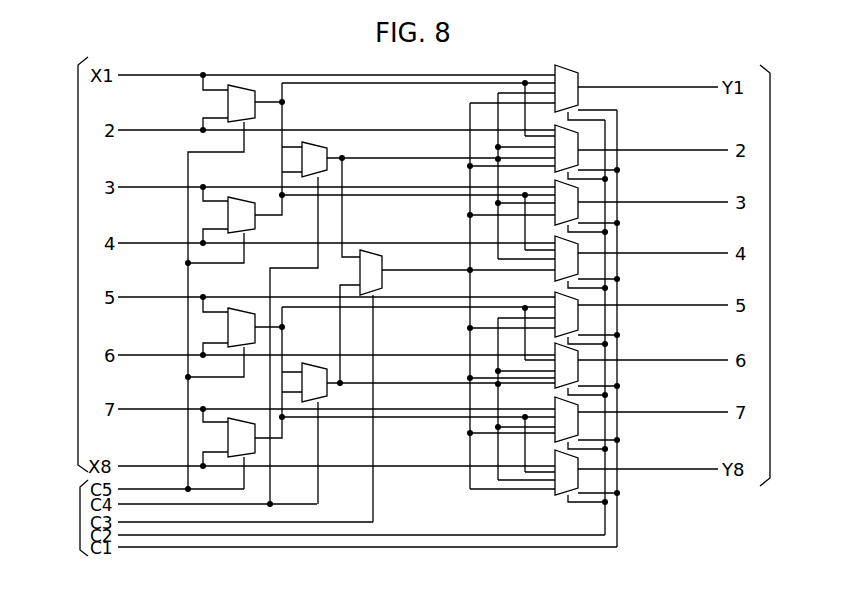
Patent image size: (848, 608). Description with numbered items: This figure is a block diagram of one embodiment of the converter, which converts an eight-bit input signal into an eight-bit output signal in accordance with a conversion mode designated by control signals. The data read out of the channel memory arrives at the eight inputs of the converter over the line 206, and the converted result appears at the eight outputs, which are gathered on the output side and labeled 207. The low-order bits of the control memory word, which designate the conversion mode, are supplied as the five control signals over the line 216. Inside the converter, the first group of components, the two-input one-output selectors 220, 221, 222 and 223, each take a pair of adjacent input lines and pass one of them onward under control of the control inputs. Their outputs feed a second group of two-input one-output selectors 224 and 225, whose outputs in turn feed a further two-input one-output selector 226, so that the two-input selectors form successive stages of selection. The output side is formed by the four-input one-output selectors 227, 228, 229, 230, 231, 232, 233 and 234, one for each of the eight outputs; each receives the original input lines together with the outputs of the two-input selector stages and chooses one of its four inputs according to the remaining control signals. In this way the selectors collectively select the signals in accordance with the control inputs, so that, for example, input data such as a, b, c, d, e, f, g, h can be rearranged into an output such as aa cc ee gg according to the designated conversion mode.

The line 206 is at (59, 264).
The output lines Y1-Y8 207 is at (790, 275).
The line 216 is at (62, 518).
The 2-input 1-output selector 220 is at (240, 85).
The 2-input 1-output selector 221 is at (243, 197).
The 2-input 1-output selector 222 is at (234, 308).
The 2-input 1-output selector 223 is at (238, 418).
The 2-input 1-output selector 224 is at (312, 142).
The 2-input 1-output selector 225 is at (313, 363).
The 2-input 1-output selector 226 is at (370, 250).
The 4-input 1-output selector 227 is at (570, 65).
The 4-input 1-output selector 228 is at (578, 135).
The 4-input 1-output selector 229 is at (578, 190).
The 4-input 1-output selector 230 is at (578, 246).
The 4-input 1-output selector 231 is at (578, 302).
The 4-input 1-output selector 232 is at (578, 353).
The 4-input 1-output selector 233 is at (578, 407).
The 4-input 1-output selector 234 is at (578, 460).